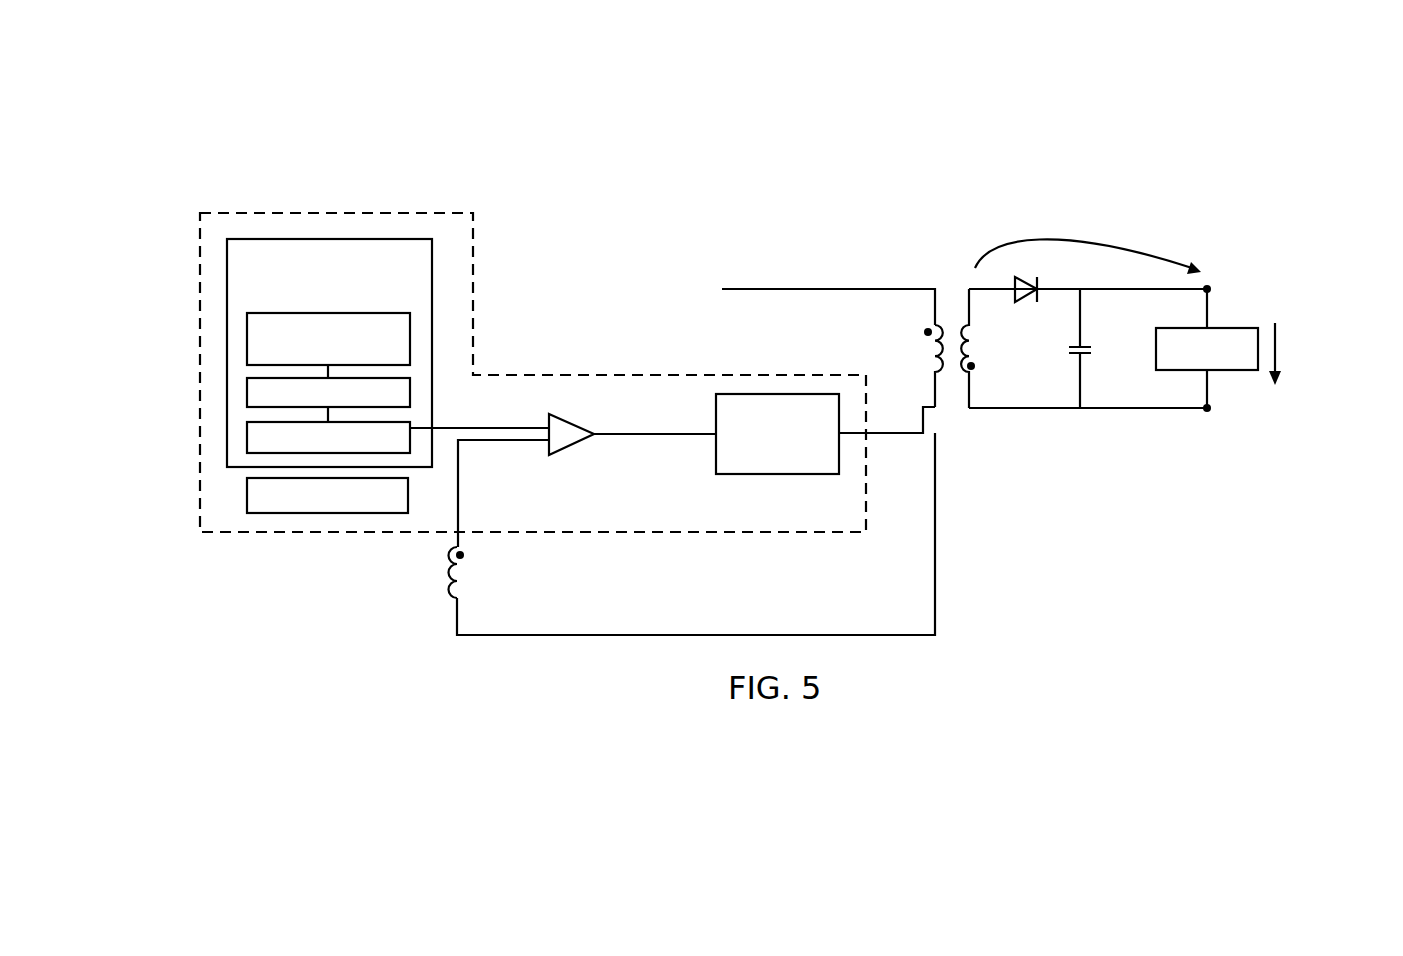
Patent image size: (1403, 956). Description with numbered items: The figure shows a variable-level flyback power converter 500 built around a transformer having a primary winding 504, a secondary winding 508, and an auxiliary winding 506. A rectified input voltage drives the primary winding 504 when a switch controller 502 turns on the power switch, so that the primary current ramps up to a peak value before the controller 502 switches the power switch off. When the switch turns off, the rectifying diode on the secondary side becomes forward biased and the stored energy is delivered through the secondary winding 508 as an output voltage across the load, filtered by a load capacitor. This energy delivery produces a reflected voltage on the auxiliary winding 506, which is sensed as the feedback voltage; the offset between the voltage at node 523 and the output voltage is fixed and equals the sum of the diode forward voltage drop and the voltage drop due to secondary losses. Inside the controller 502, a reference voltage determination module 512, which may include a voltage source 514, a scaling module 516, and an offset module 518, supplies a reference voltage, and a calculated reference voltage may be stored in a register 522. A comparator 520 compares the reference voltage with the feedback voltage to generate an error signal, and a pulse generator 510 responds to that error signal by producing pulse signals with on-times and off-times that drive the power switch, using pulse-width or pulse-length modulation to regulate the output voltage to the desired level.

The variable-level flyback power converter 500 is at (320, 74).
The switch controller 502 is at (474, 298).
The primary winding 504 is at (913, 341).
The auxiliary winding 506 is at (440, 594).
The secondary winding 508 is at (984, 352).
The pulse generator 510 is at (777, 434).
The reference voltage determination module 512 is at (329, 353).
The voltage source 514 is at (328, 339).
The scaling module 516 is at (328, 392).
The offset module 518 is at (328, 437).
The comparator 520 is at (586, 443).
The register 522 is at (327, 495).
The node 523 is at (718, 417).